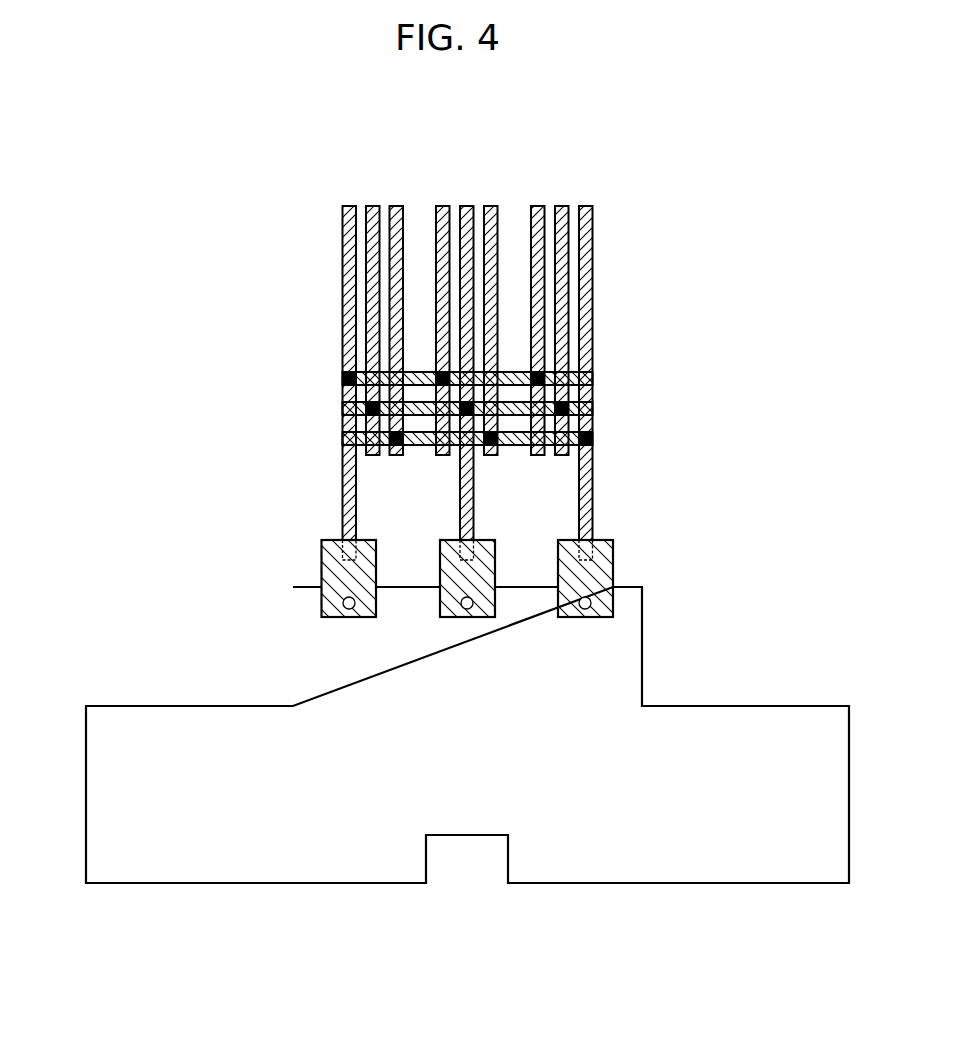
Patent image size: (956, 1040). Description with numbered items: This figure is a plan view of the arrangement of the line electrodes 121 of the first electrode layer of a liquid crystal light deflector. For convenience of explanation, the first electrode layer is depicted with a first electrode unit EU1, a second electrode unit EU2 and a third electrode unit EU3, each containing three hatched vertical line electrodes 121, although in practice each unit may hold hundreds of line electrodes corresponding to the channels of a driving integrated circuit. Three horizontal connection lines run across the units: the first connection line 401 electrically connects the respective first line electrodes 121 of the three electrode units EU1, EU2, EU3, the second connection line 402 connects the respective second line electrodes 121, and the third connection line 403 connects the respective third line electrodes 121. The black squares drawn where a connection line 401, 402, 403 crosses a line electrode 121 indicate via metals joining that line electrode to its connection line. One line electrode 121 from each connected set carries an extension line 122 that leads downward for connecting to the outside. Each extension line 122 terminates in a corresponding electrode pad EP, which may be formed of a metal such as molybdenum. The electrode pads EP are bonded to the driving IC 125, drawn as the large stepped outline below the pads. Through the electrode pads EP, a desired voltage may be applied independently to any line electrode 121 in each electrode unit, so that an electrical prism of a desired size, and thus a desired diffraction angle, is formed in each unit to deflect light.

The line electrode 121 is at (428, 348).
The extension line 122 is at (349, 494).
The driving IC 125 is at (111, 800).
The first connection line 401 is at (514, 371).
The second connection line 402 is at (512, 402).
The third connection line 403 is at (517, 446).
The electrode pad EP is at (613, 565).
The first electrode unit EU1 is at (408, 197).
The second electrode unit EU2 is at (501, 197).
The third electrode unit EU3 is at (596, 197).